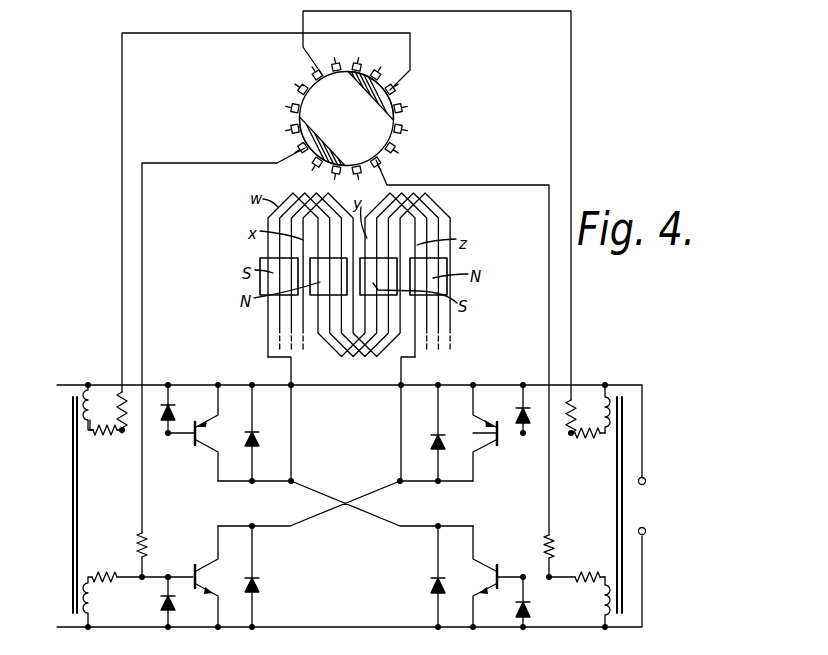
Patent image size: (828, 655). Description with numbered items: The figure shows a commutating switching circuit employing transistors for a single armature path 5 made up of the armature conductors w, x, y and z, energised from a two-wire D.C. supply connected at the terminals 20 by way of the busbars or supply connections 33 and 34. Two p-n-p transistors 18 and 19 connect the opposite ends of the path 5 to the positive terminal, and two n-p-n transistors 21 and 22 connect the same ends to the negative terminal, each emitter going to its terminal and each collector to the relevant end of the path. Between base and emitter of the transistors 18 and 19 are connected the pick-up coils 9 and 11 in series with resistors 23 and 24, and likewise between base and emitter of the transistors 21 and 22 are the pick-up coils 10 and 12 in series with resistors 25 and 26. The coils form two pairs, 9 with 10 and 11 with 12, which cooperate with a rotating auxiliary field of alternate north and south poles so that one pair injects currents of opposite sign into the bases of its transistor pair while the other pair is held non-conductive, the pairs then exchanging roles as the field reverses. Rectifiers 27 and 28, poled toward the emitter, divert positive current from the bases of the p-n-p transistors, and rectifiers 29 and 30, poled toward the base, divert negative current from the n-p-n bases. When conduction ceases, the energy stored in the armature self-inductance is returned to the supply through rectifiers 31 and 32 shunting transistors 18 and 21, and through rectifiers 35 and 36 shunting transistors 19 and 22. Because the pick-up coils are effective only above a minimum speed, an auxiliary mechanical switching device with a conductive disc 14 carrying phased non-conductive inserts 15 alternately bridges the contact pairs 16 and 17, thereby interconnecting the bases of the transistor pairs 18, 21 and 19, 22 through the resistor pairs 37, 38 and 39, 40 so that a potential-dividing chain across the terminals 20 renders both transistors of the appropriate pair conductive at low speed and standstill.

The armature path 5 is at (291, 381).
The pick-up coil 9 is at (93, 396).
The pick-up coil 10 is at (88, 627).
The pick-up coil 11 is at (598, 398).
The pick-up coil 12 is at (601, 614).
The conductive disc 14 is at (405, 134).
The non-conductive inserts 15 is at (405, 118).
The contacts 16 is at (398, 84).
The contacts 17 is at (317, 77).
The p-n-p transistor 18 is at (204, 442).
The p-n-p transistor 19 is at (487, 440).
The terminals 20 is at (647, 504).
The n-p-n transistor 21 is at (208, 568).
The n-p-n transistor 22 is at (493, 567).
The resistor 23 is at (107, 435).
The resistor 24 is at (584, 436).
The resistor 25 is at (103, 573).
The resistor 26 is at (592, 577).
The rectifier 27 is at (172, 404).
The rectifier 28 is at (515, 412).
The rectifier 29 is at (177, 613).
The rectifier 30 is at (515, 613).
The rectifier 31 is at (259, 443).
The rectifier 32 is at (260, 587).
The busbar 33 is at (412, 384).
The busbar 34 is at (362, 628).
The rectifier 35 is at (432, 443).
The rectifier 36 is at (431, 583).
The resistor 37 is at (120, 392).
The resistor 38 is at (143, 545).
The resistor 39 is at (564, 414).
The resistor 40 is at (553, 553).